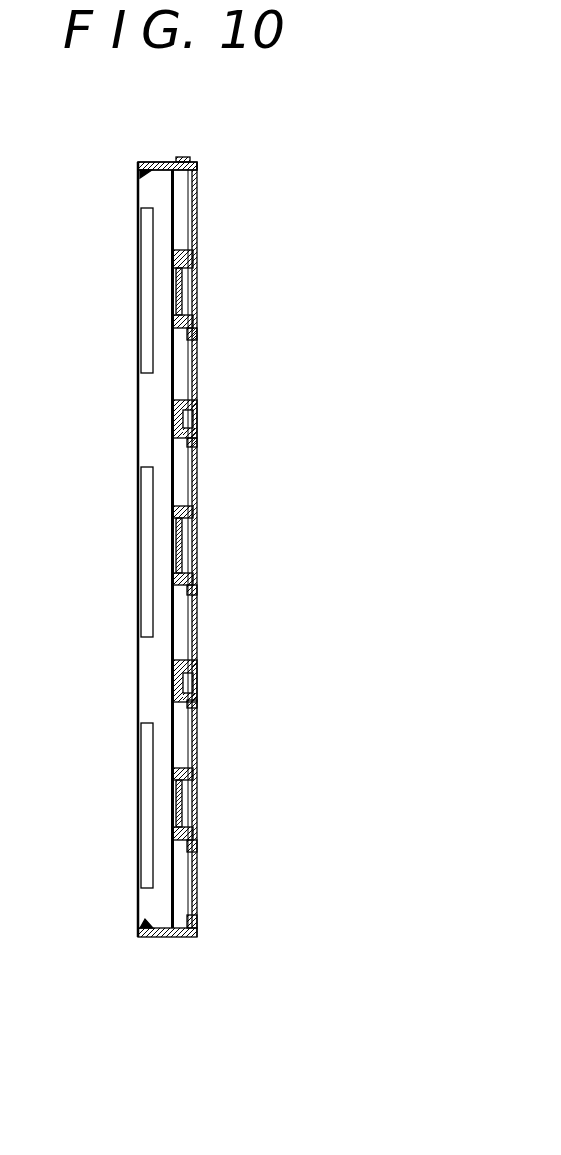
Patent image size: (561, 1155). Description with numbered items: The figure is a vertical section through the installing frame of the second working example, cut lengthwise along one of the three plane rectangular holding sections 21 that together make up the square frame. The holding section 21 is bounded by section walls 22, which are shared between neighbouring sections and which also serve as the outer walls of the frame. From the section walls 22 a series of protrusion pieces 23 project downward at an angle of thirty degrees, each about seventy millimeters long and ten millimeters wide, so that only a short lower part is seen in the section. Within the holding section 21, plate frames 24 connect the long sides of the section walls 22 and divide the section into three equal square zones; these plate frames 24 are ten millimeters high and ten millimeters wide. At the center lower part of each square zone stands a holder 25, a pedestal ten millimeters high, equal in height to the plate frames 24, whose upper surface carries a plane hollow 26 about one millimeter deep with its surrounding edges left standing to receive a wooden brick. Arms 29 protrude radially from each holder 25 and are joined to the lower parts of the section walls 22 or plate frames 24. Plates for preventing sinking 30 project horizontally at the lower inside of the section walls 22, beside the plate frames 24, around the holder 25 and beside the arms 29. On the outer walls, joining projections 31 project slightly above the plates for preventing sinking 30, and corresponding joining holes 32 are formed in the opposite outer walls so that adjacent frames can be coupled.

The holding section 21 is at (128, 564).
The section wall 22 is at (158, 162).
The protrusion piece 23 is at (148, 172).
The plate frame 24 is at (197, 416).
The holder 25 is at (192, 285).
The plane hollow 26 is at (178, 266).
The arm 29 is at (183, 205).
The plate for preventing sinking 30 is at (193, 330).
The joining projection 31 is at (183, 159).
The joining hole 32 is at (178, 937).